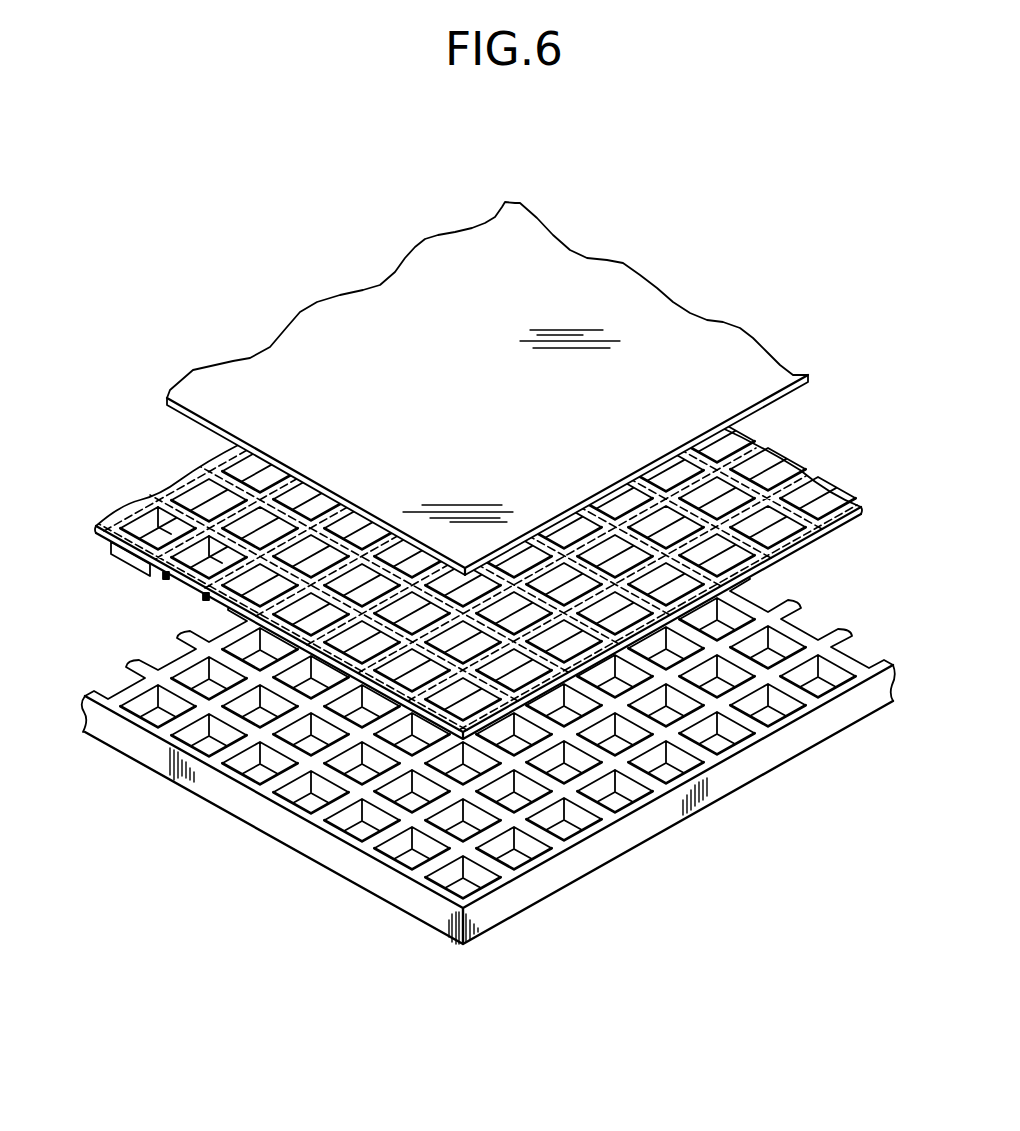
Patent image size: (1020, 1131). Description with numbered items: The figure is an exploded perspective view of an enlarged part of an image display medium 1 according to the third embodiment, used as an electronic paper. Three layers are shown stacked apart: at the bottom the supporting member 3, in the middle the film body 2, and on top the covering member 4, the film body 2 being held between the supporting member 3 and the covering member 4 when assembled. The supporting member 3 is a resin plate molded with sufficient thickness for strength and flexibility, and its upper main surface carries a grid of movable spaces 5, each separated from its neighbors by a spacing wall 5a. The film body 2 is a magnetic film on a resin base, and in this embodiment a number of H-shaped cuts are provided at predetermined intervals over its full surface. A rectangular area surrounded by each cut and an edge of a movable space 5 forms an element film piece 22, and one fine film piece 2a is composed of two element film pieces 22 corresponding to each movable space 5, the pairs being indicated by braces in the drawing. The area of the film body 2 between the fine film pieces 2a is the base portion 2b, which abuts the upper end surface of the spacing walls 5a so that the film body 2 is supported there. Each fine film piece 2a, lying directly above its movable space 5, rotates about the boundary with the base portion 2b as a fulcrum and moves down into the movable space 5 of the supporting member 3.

The image display medium 1 is at (482, 552).
The film body 2 is at (482, 522).
The fine film piece 2a is at (258, 471).
The base portion 2b is at (222, 468).
The supporting member 3 is at (488, 729).
The covering member 4 is at (737, 350).
The movable space 5 is at (457, 833).
The spacing wall 5a is at (388, 777).
The element film piece 22 is at (455, 417).